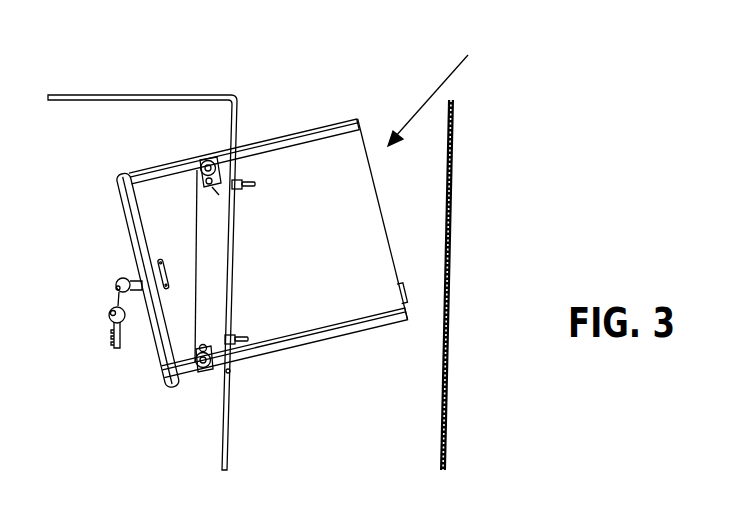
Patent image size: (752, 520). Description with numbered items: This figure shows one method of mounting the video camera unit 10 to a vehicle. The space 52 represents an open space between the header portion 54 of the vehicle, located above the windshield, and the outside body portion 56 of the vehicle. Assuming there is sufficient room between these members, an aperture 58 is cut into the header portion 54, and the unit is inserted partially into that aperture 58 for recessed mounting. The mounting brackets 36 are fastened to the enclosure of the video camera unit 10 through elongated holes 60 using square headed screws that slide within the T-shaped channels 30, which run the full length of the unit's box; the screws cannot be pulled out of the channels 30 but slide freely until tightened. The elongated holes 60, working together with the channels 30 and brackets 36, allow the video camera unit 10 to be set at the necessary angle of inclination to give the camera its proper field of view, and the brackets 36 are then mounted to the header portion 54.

The video camera unit 10 is at (333, 155).
The channels 30 is at (273, 155).
The mounting brackets 36 is at (212, 235).
The space 52 is at (437, 87).
The header portion 54 is at (197, 93).
The outside body portion 56 is at (451, 233).
The aperture 58 is at (229, 373).
The elongated holes 60 is at (182, 171).